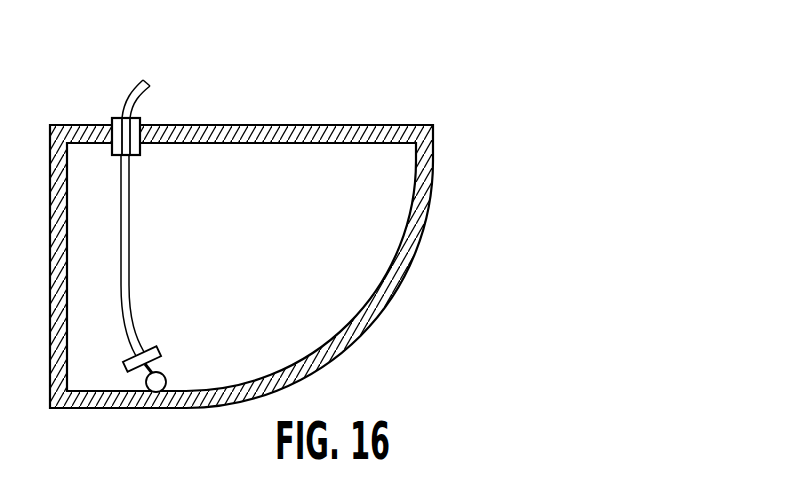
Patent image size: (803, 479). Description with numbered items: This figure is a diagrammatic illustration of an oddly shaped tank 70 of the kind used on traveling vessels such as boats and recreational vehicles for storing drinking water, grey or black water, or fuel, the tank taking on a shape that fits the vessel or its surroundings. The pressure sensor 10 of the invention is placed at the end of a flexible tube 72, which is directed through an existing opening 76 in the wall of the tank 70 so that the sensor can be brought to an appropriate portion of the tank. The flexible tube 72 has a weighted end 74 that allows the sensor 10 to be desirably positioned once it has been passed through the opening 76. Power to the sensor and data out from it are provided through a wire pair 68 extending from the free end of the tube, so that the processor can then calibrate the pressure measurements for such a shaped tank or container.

The pressure sensor 10 is at (168, 371).
The wire pair 68 is at (149, 74).
The tank 70 is at (434, 247).
The flexible tube 72 is at (129, 205).
The weighted end 74 is at (147, 345).
The existing opening 76 is at (139, 117).